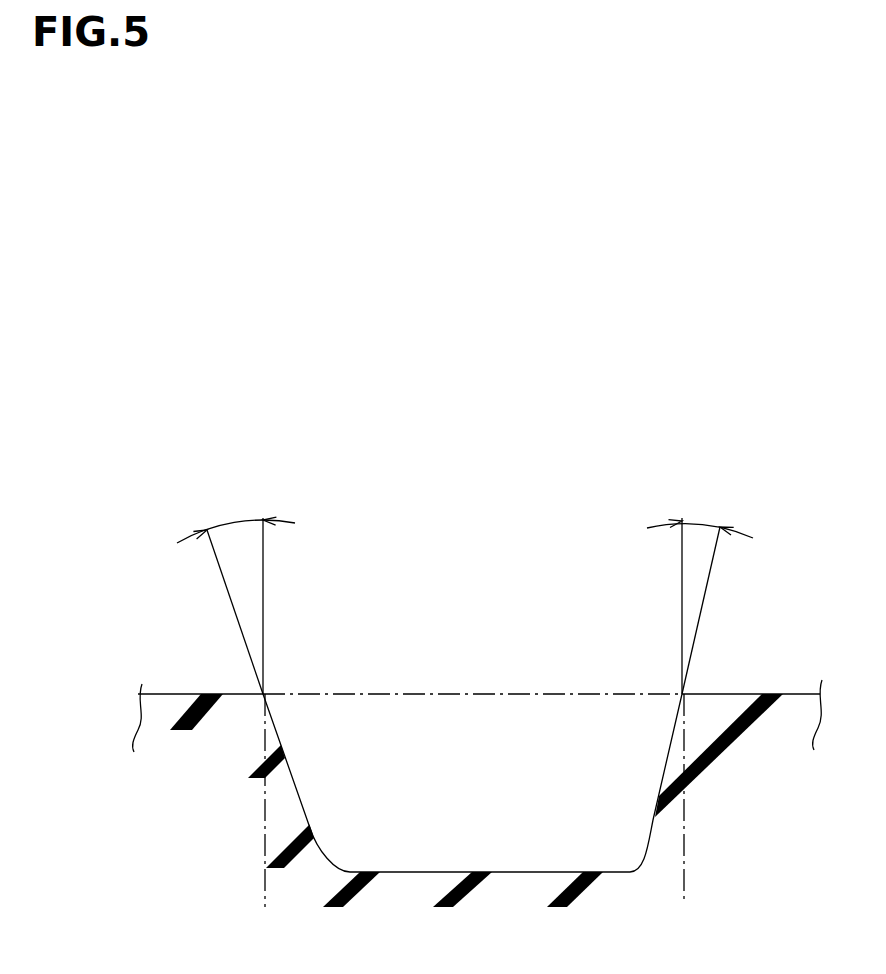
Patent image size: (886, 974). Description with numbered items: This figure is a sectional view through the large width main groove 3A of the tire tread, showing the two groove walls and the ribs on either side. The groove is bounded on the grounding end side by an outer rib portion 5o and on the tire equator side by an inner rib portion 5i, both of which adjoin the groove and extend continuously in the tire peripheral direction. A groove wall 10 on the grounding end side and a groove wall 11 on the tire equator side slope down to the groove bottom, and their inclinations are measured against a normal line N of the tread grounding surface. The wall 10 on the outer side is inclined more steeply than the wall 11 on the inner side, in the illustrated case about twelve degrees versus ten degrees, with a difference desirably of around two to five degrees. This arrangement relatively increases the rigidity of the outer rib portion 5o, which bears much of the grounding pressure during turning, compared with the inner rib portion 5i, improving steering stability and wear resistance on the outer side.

The outer rib portion 5o is at (183, 694).
The inner rib portion 5i is at (737, 694).
The groove wall 10 is at (300, 790).
The groove wall 11 is at (668, 757).
The large width main groove 3A is at (500, 796).
The normal line N is at (263, 562).